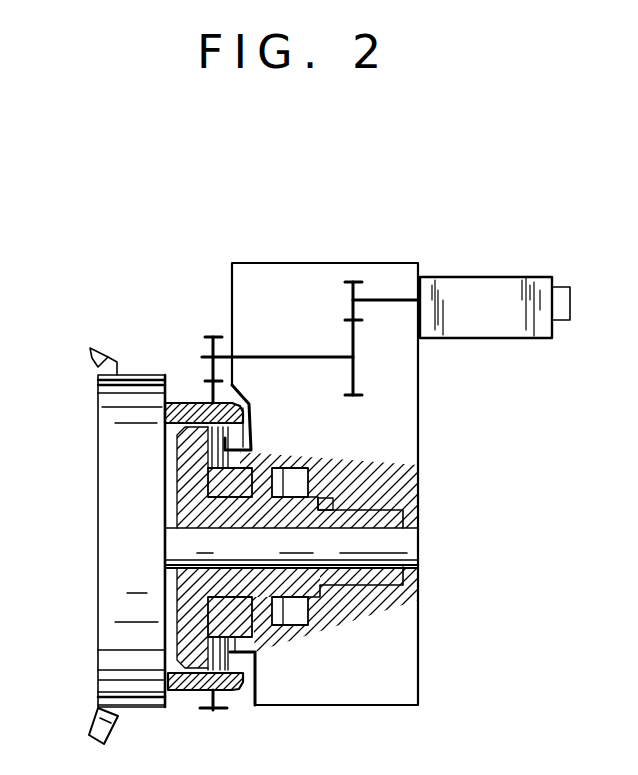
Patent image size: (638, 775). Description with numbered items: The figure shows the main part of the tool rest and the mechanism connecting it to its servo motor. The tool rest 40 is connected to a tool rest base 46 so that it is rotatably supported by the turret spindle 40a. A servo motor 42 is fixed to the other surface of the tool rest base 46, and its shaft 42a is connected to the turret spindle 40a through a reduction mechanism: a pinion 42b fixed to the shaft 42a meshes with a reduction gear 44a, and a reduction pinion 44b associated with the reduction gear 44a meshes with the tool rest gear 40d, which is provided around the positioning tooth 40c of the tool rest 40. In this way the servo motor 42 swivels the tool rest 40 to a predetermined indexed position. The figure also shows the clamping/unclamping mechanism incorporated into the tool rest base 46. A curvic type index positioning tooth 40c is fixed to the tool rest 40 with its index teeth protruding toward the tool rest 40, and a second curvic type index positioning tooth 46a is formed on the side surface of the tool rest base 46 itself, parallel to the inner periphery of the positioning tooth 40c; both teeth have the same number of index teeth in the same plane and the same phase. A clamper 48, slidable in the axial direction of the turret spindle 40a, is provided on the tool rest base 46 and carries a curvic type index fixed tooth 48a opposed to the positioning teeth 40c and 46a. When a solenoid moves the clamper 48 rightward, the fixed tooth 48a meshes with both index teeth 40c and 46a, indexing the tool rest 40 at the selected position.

The tool rest 40 is at (112, 640).
The turret spindle 40a is at (408, 540).
The index positioning tooth 40c is at (242, 425).
The tool rest gear 40d is at (208, 393).
The servo motor 42 is at (485, 287).
The shaft of the servo motor 42a is at (392, 298).
The pinion 42b is at (345, 300).
The reduction gear 44a is at (362, 338).
The reduction pinion 44b is at (208, 352).
The tool rest base 46 is at (397, 675).
The index positioning tooth 46a is at (240, 460).
The clamper 48 is at (263, 583).
The index fixed tooth 48a is at (217, 447).